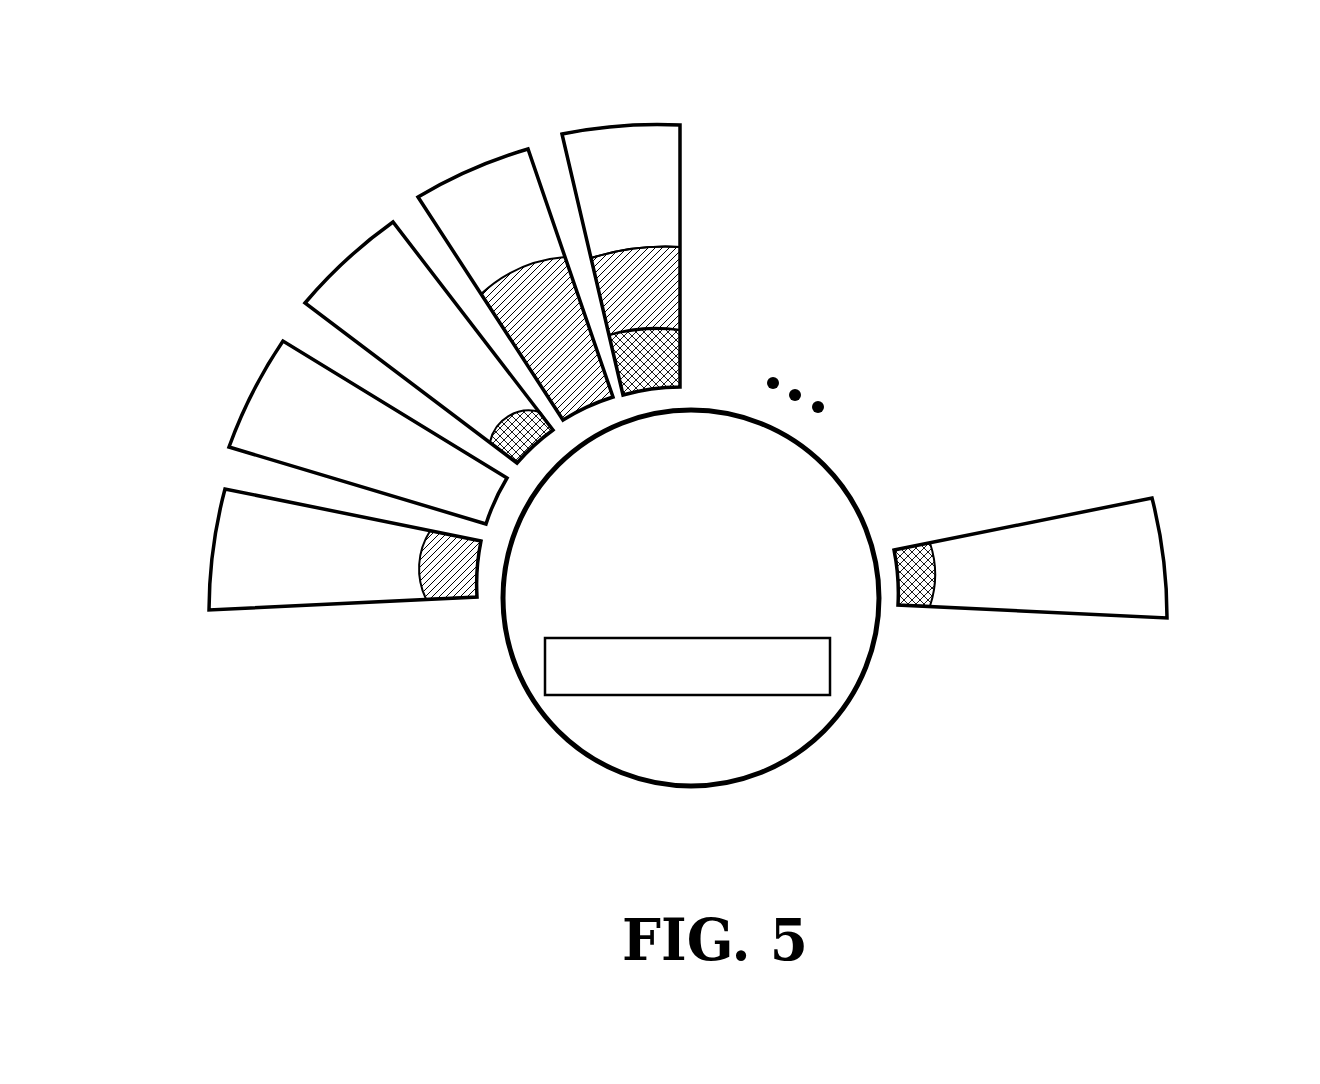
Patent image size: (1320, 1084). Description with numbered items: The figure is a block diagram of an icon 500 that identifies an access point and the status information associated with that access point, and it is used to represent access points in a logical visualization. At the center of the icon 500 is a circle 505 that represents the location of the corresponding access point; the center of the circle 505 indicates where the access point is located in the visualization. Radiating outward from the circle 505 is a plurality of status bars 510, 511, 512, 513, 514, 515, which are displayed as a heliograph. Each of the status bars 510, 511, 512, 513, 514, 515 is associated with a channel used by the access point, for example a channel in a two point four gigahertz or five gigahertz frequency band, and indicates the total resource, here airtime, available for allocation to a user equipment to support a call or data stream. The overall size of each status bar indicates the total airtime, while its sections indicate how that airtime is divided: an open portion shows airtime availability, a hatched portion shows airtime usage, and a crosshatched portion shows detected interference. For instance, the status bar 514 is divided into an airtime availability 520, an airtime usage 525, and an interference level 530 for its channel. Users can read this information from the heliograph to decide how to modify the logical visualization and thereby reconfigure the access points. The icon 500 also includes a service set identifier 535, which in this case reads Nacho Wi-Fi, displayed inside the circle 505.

The icon 500 is at (1204, 96).
The circle 505 is at (691, 598).
The status bar 510 is at (171, 555).
The status bar 511 is at (223, 388).
The status bar 512 is at (310, 270).
The status bar 513 is at (428, 168).
The status bar 514 is at (616, 220).
The status bar 515 is at (1175, 555).
The airtime availability 520 is at (680, 157).
The airtime usage 525 is at (680, 285).
The interference level 530 is at (680, 352).
The service set identifier (SSID) 535 is at (715, 697).